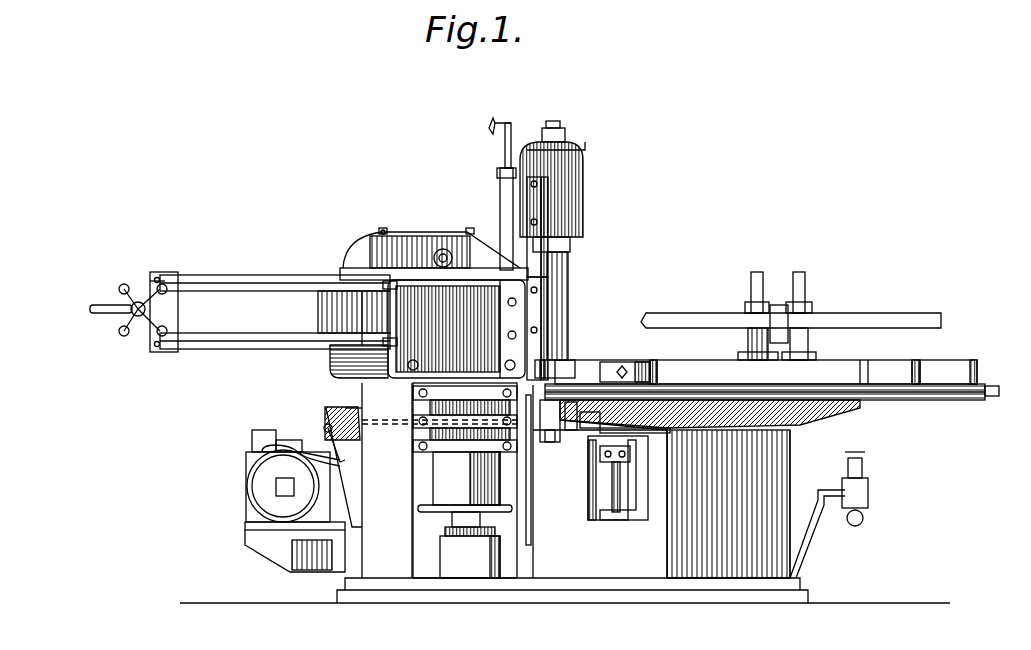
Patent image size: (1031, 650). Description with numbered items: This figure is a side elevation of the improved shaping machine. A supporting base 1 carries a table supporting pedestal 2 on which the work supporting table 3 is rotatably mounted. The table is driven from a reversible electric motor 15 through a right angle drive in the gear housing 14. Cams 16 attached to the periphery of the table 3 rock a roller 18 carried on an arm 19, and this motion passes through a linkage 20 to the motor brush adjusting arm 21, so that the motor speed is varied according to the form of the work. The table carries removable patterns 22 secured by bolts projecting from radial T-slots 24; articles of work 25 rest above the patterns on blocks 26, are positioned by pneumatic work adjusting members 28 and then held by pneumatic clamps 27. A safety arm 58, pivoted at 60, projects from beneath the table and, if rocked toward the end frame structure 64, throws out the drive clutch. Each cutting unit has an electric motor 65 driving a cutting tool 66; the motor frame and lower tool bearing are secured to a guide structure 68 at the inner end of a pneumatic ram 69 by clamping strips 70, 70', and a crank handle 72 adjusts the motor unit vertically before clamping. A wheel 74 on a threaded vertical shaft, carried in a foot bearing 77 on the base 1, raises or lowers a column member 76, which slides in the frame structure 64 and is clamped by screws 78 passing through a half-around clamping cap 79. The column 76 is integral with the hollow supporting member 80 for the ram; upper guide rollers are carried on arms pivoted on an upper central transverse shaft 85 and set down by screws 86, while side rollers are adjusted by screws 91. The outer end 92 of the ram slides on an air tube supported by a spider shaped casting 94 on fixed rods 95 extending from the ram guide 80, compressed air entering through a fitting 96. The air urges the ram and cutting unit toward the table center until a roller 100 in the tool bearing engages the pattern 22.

The supporting base 1 is at (573, 594).
The table supporting pedestal 2 is at (665, 532).
The work supporting table 3 is at (990, 386).
The gear housing 14 is at (252, 438).
The electric motor 15 is at (258, 481).
The cams 16 is at (616, 368).
The roller 18 is at (605, 400).
The arm 19 is at (553, 444).
The linkage 20 is at (342, 412).
The motor brush adjusting arm 21 is at (326, 426).
The removable patterns 22 is at (895, 368).
The radial T-slots 24 is at (900, 402).
The articles of work 25 is at (855, 316).
The blocks 26 is at (748, 342).
The pneumatic clamps 27 is at (750, 300).
The pneumatic work adjusting members 28 is at (805, 305).
The arm 58 is at (672, 434).
The pivot 60 is at (628, 450).
The end frame structure 64 is at (532, 536).
The electric motor 65 is at (583, 172).
The cutting tool 66 is at (575, 282).
The guide structure 68 is at (522, 204).
The clamping strip 70 is at (572, 227).
The clamping strip 70' is at (574, 328).
The crank handle 72 is at (490, 120).
The wheel 74 is at (432, 512).
The column member 76 is at (445, 480).
The foot bearing 77 is at (495, 528).
The screws 78 is at (418, 422).
The half-around clamping cap 79 is at (440, 448).
The hollow supporting member 80 is at (330, 370).
The upper central transverse shaft 85 is at (441, 250).
The screws 86 is at (383, 228).
The screws 91 is at (512, 306).
The outer end of the ram 92 is at (166, 274).
The spider shaped casting 94 is at (122, 296).
The fixed rods 95 is at (275, 338).
The fitting 96 is at (124, 330).
The roller 100 is at (560, 370).
The pneumatic ram 69 is at (262, 276).